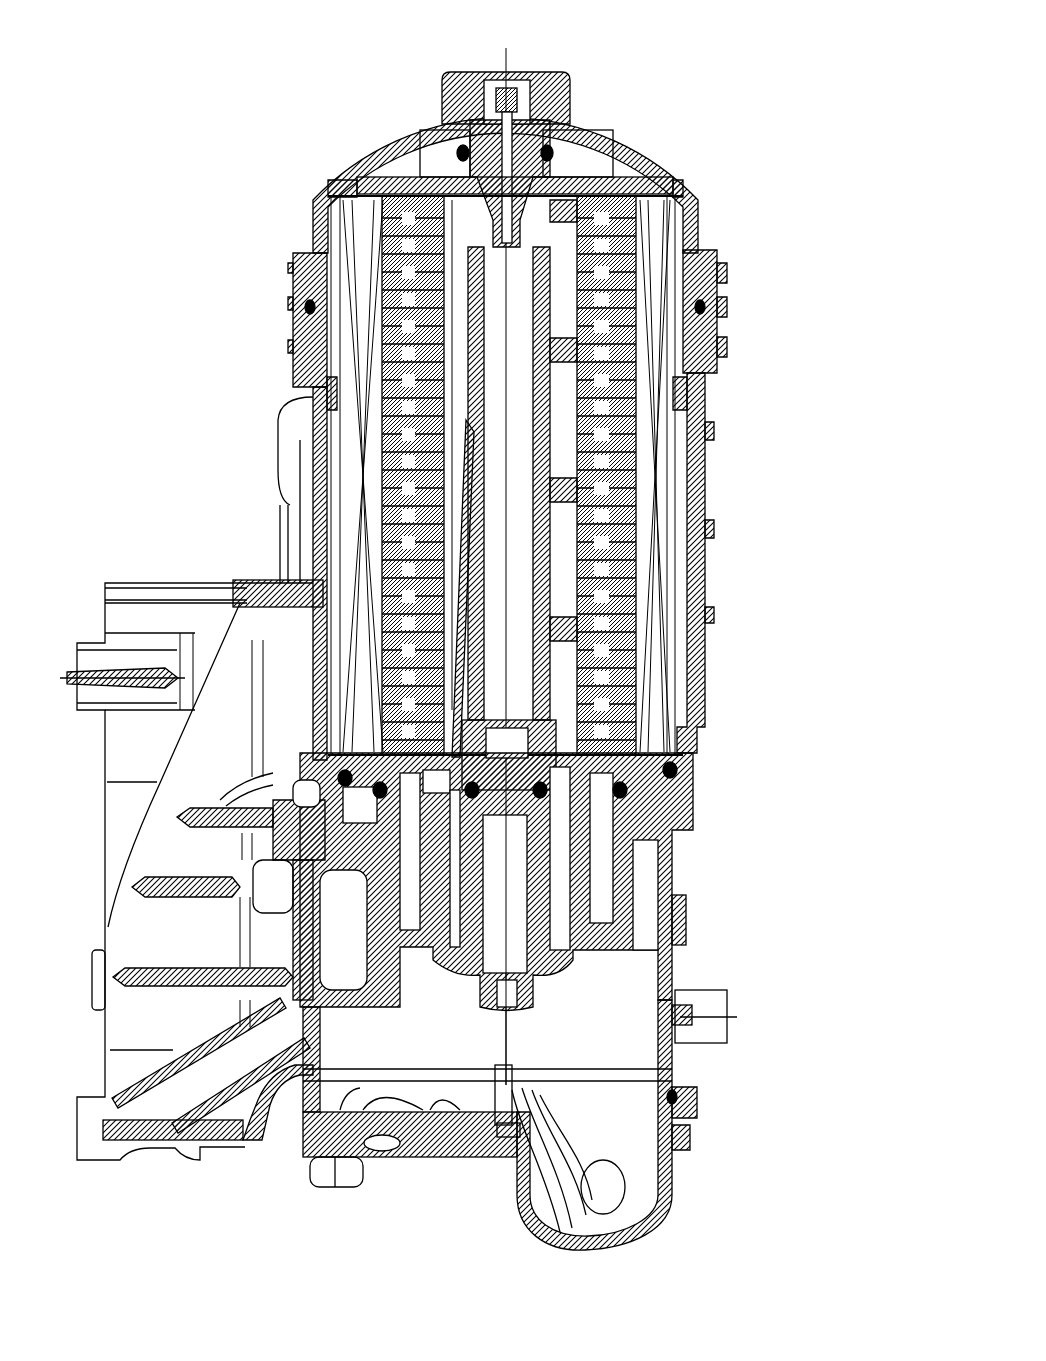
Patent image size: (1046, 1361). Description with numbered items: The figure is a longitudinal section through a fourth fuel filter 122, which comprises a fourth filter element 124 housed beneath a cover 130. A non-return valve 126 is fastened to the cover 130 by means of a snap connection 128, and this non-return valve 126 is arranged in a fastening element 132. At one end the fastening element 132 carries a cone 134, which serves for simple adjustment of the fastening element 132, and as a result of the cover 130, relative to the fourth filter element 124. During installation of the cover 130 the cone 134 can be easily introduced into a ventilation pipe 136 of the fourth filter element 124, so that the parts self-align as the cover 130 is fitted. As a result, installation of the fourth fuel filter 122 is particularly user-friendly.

The fourth fuel filter 122 is at (170, 99).
The fourth filter element 124 is at (686, 220).
The non-return valve 126 is at (513, 113).
The snap connection 128 is at (488, 105).
The cover 130 is at (680, 148).
The fastening element 132 is at (470, 190).
The cone 134 is at (486, 211).
The ventilation pipe 136 is at (478, 375).